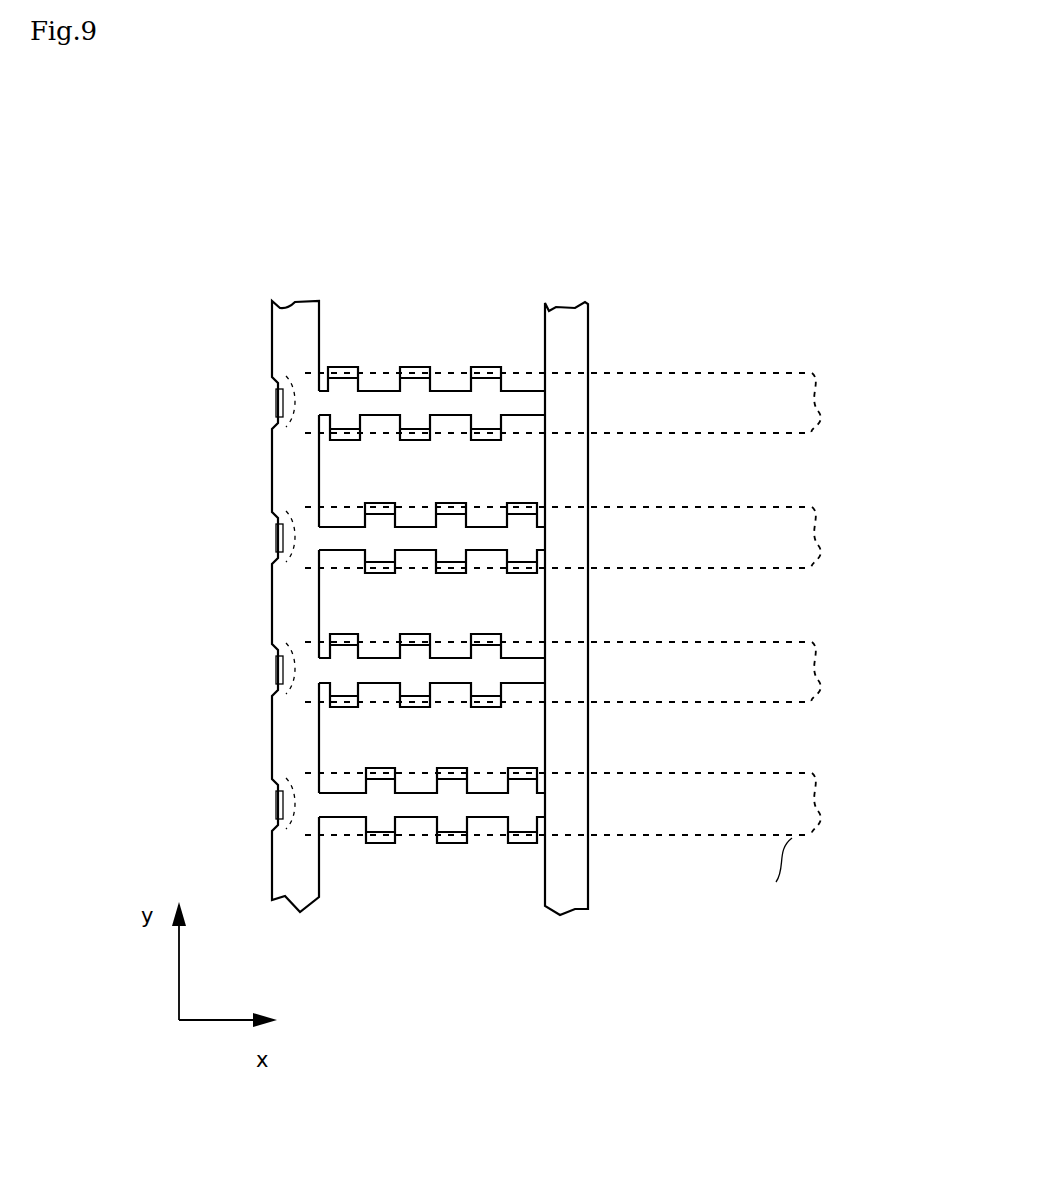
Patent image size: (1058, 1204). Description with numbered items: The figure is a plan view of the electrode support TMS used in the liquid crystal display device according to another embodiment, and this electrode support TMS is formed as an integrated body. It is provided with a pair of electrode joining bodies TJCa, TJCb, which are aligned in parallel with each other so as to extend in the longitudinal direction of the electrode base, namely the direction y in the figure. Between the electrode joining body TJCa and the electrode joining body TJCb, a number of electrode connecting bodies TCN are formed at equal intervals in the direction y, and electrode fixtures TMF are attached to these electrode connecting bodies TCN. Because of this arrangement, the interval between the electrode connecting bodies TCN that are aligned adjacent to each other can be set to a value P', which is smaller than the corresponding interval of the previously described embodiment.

The electrode support TMS is at (541, 512).
The electrode fixture TMF is at (347, 367).
The electrode connecting body TCN is at (445, 413).
The electrode joining body TJCa is at (287, 353).
The electrode joining body TJCb is at (570, 337).
The interval between adjacent electrode connecting bodies P' is at (756, 612).